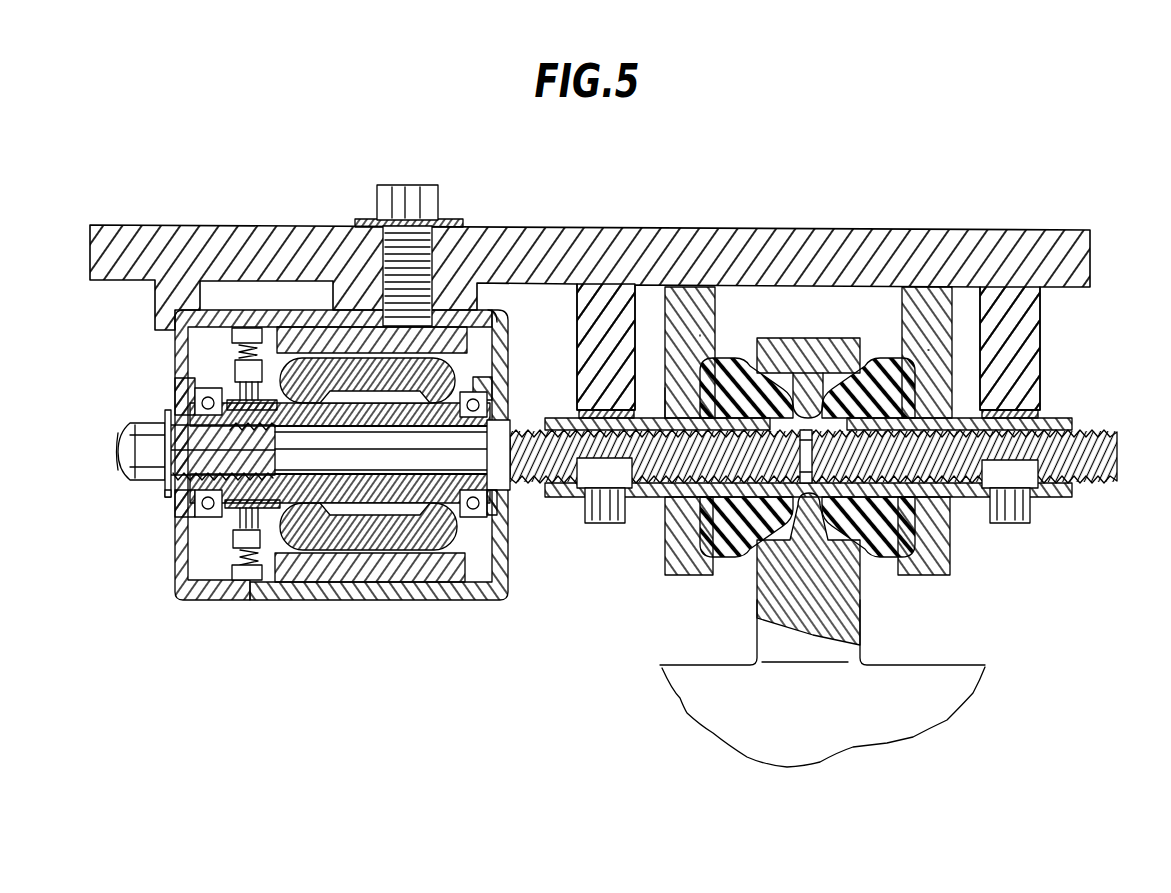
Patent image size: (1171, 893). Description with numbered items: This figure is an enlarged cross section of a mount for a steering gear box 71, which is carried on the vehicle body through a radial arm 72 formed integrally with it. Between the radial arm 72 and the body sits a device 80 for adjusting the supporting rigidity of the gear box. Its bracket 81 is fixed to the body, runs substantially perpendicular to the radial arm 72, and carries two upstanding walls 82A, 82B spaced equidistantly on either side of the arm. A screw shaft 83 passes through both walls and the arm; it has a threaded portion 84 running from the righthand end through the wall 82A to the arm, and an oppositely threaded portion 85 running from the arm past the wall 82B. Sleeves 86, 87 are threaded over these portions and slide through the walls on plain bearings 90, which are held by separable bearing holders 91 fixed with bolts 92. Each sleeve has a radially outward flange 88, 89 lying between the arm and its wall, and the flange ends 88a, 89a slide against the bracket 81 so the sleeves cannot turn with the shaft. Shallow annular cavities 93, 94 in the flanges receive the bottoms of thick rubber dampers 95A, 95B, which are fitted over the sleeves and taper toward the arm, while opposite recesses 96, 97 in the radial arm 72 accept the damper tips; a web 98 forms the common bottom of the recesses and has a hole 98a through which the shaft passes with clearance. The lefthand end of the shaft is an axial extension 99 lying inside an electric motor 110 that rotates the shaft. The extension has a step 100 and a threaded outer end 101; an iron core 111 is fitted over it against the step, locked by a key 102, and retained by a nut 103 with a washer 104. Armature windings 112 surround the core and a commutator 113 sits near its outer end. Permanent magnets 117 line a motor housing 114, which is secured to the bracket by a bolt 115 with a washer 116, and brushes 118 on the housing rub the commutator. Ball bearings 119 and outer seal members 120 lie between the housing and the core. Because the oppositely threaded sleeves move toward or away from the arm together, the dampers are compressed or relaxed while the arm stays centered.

The steering gear box 71 is at (955, 712).
The radial arm 72 is at (812, 625).
The device for adjusting supporting rigidity 80 is at (840, 458).
The bracket 81 is at (658, 225).
The upstanding wall 82A is at (1015, 335).
The upstanding wall 82B is at (595, 330).
The screw shaft 83 is at (530, 494).
The threaded portion 84 is at (1115, 455).
The threaded portion 85 is at (548, 426).
The sleeve 86 is at (962, 495).
The sleeve 87 is at (655, 497).
The flange 88 is at (928, 350).
The flange end 88a is at (925, 290).
The flange 89 is at (700, 336).
The flange end 89a is at (693, 287).
The plain bearing 90 is at (600, 412).
The bearing holder 91 is at (608, 525).
The bolt 92 is at (600, 492).
The annular cavity 93 is at (905, 390).
The annular cavity 94 is at (665, 388).
The rubber damper 95A is at (878, 353).
The rubber damper 95B is at (728, 562).
The recess 96 is at (862, 538).
The recess 97 is at (783, 370).
The web 98 is at (808, 400).
The hole 98a is at (858, 622).
The axial extension 99 is at (360, 462).
The step 100 is at (490, 455).
The threaded outer end 101 is at (118, 450).
The key 102 is at (165, 415).
The nut 103 is at (125, 478).
The washer 104 is at (168, 497).
The electric motor 110 is at (300, 422).
The iron core 111 is at (400, 505).
The armature windings 112 is at (497, 322).
The commutator 113 is at (233, 378).
The motor housing 114 is at (447, 590).
The bolt 115 is at (405, 185).
The washer 116 is at (365, 219).
The permanent magnets 117 is at (302, 337).
The brushes 118 is at (237, 522).
The ball bearings 119 is at (480, 400).
The outer seal members 120 is at (178, 402).